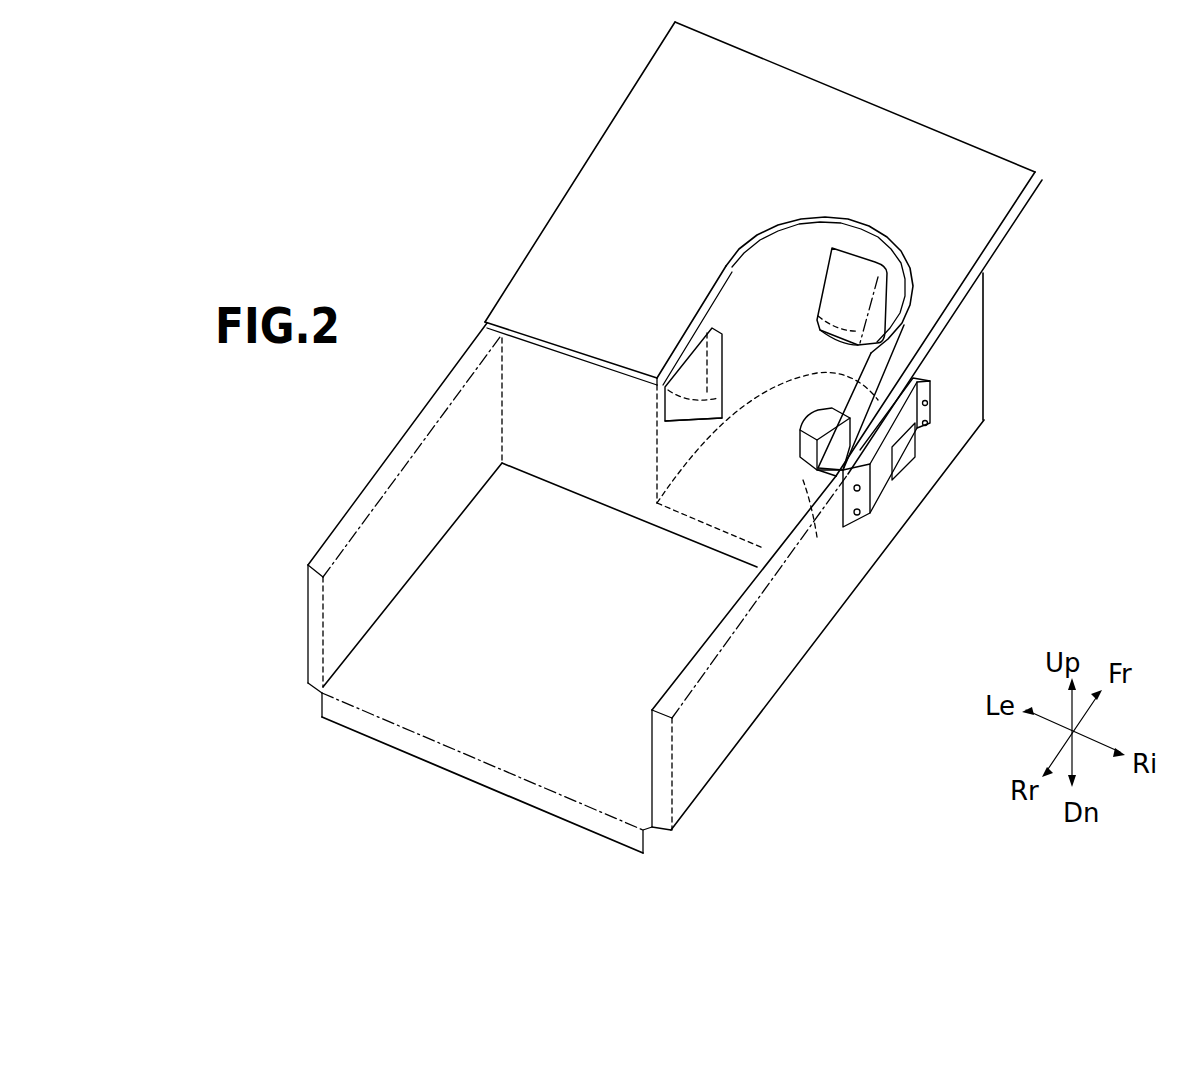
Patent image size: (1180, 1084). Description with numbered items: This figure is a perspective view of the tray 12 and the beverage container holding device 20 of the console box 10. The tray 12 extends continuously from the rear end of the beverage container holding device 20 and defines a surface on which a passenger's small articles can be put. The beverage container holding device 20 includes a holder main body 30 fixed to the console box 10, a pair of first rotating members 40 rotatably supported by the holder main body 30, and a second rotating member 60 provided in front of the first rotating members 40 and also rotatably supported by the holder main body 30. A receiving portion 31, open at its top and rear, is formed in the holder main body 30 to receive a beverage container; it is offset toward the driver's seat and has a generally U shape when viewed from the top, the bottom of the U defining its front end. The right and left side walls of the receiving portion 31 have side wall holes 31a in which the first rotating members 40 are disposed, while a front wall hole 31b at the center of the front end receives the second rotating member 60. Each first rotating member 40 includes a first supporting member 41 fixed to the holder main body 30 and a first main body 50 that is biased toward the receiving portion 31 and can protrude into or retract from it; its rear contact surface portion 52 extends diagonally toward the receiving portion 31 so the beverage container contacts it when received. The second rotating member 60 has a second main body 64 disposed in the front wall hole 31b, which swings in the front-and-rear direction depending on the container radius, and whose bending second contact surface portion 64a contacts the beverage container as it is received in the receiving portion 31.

The console box 10 is at (633, 464).
The tray 12 is at (501, 730).
The beverage container holding device 20 is at (760, 246).
The holder main body 30 is at (760, 246).
The receiving portion 31 is at (785, 326).
The side wall hole 31a is at (720, 345).
The front wall hole 31b is at (822, 262).
The first rotating member 40 is at (718, 439).
The first supporting member 41 is at (866, 486).
The first main body 50 is at (718, 439).
The rear contact surface portion 52 is at (690, 394).
The second rotating member 60 is at (853, 255).
The second main body 64 is at (853, 286).
The second contact surface portion 64a is at (832, 326).